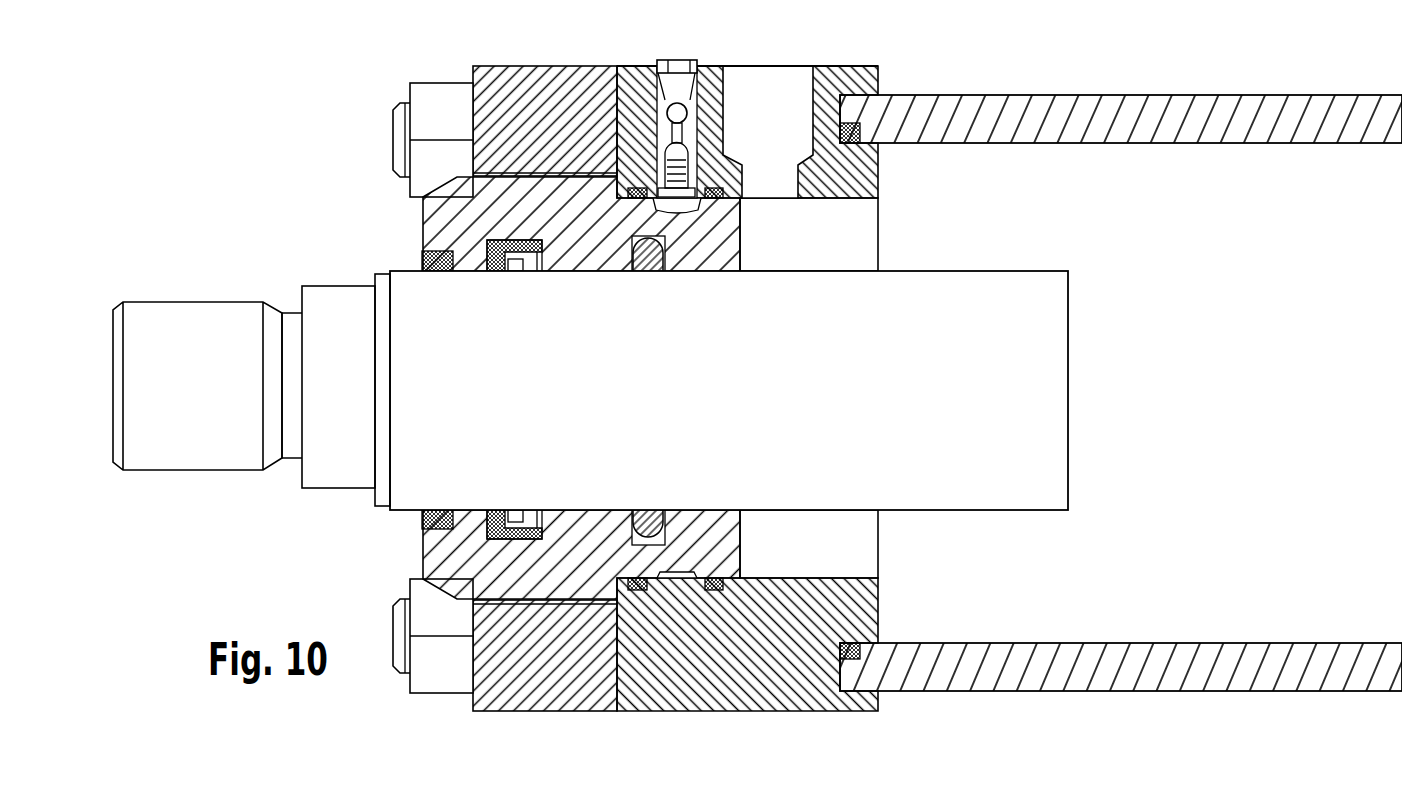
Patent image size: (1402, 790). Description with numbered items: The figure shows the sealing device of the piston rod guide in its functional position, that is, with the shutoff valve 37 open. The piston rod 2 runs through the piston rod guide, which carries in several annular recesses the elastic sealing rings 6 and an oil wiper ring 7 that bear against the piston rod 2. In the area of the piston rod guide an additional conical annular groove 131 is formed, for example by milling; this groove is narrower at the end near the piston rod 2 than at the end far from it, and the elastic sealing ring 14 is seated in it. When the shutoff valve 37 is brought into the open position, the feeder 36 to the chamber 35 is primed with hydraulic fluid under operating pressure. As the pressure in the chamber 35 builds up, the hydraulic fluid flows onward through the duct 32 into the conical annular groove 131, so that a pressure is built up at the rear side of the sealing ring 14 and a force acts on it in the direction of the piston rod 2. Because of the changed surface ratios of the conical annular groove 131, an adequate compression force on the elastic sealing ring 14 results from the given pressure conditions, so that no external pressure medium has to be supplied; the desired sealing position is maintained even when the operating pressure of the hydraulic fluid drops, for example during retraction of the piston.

The piston rod 2 is at (410, 292).
The elastic sealing rings 6 is at (490, 530).
The oil wiper ring 7 is at (422, 517).
The elastic sealing ring 14 is at (665, 532).
The duct 32 is at (660, 220).
The chamber 35 is at (668, 118).
The feeder 36 is at (723, 178).
The shutoff valve 37 is at (687, 103).
The conical annular groove 131 is at (632, 537).